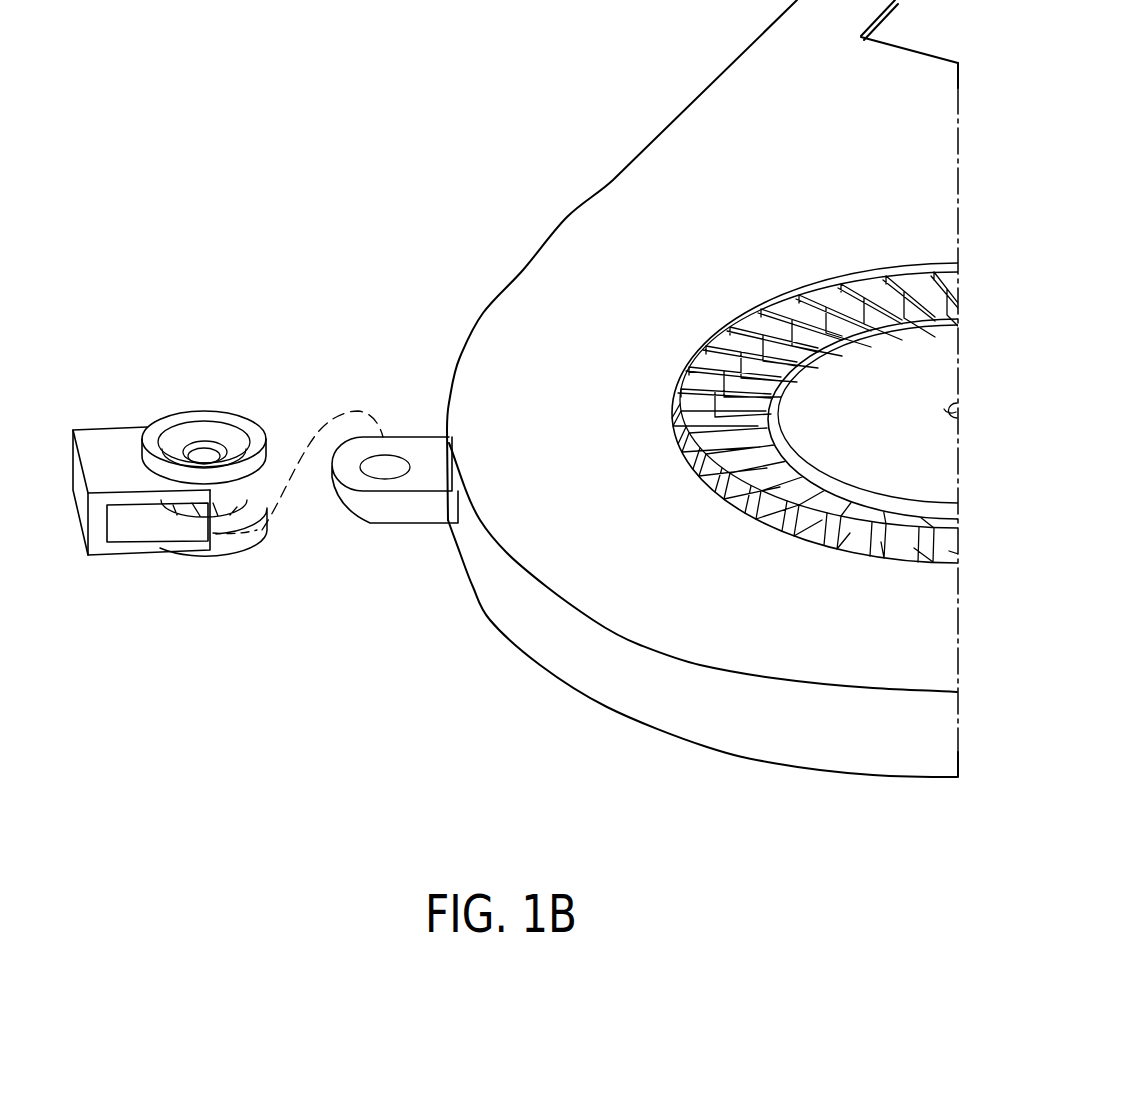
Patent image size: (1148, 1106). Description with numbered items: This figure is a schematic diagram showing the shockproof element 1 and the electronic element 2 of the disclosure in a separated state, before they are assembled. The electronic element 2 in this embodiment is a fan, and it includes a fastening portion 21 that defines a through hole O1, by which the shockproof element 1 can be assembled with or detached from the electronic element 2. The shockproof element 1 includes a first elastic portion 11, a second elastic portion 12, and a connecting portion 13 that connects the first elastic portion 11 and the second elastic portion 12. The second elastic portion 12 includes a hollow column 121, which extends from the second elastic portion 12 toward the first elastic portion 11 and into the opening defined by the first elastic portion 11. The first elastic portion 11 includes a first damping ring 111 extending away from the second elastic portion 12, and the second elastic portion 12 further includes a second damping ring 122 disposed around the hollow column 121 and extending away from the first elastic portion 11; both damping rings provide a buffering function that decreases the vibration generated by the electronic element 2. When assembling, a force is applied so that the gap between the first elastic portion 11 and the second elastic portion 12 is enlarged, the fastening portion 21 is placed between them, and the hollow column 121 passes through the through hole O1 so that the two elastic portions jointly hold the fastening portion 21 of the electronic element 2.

The shockproof element 1 is at (163, 472).
The first elastic portion 11 is at (147, 545).
The first damping ring 111 is at (225, 548).
The second elastic portion 12 is at (108, 445).
The hollow column 121 is at (203, 510).
The second damping ring 122 is at (212, 420).
The connecting portion 13 is at (83, 505).
The electronic element 2 is at (713, 97).
The fastening portion 21 is at (395, 495).
The through hole O1 is at (385, 466).